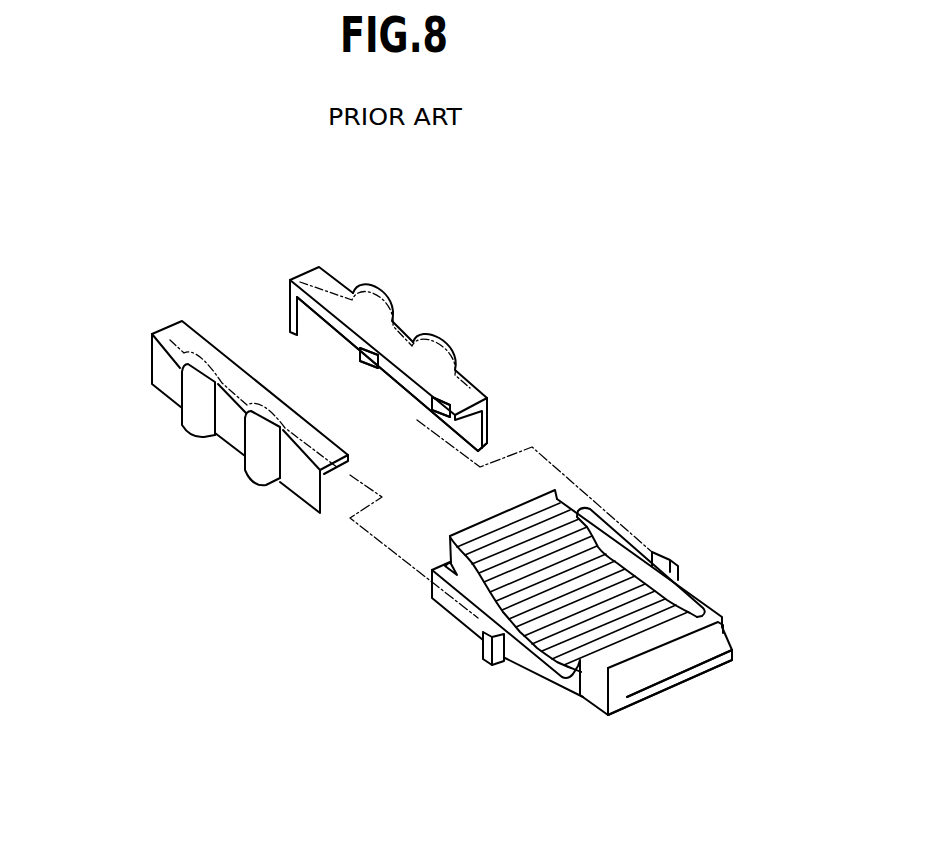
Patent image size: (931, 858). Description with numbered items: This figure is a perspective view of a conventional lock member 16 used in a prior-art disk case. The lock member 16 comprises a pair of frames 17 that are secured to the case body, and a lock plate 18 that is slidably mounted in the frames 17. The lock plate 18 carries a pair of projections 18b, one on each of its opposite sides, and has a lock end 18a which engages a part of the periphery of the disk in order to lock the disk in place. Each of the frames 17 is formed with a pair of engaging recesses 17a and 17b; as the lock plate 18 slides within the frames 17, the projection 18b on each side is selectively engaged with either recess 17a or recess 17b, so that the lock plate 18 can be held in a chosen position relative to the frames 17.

The lock member 16 is at (557, 411).
The frames 17 is at (323, 290).
The engaging recess 17a is at (377, 360).
The engaging recess 17b is at (436, 417).
The lock plate 18 is at (557, 497).
The lock end 18a is at (723, 650).
The projections 18b is at (670, 560).